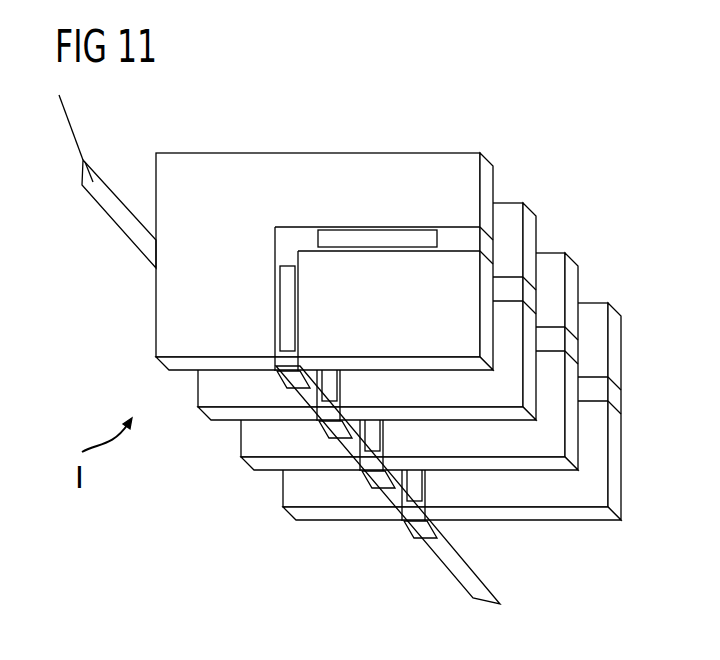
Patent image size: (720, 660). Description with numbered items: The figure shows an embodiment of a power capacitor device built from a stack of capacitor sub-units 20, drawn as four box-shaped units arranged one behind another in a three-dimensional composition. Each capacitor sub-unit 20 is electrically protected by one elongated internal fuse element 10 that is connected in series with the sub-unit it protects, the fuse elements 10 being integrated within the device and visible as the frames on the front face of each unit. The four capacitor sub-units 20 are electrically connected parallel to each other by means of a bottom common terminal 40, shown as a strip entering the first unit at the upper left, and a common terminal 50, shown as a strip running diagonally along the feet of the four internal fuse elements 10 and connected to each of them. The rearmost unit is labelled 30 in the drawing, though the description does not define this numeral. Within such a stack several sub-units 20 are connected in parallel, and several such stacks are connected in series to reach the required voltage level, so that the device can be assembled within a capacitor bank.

The internal fuse element 10 is at (288, 236).
The capacitor sub-unit 20 is at (552, 260).
The rear module housing 30 is at (613, 458).
The bottom common terminal 40 is at (118, 211).
The common terminal 50 is at (467, 573).